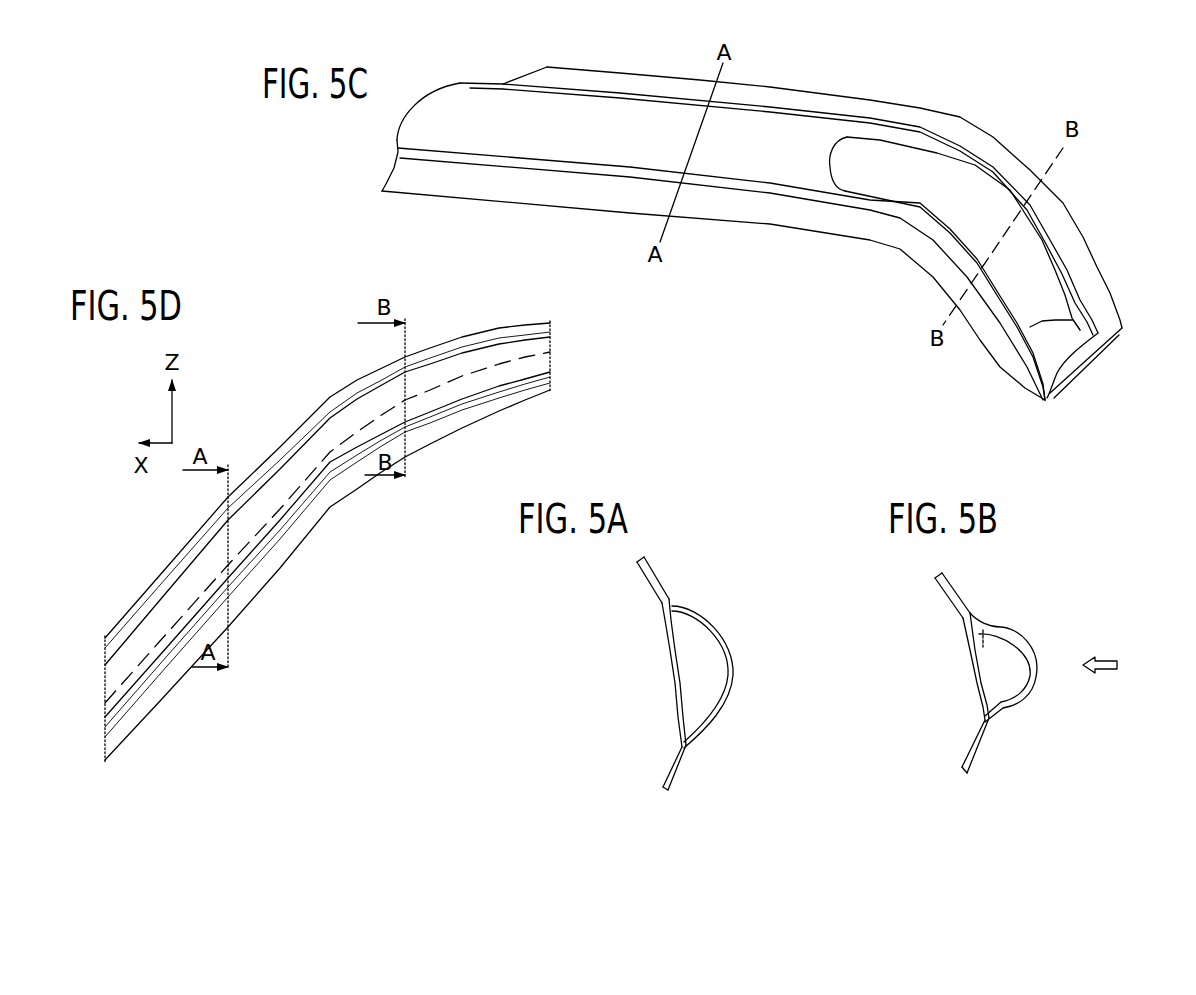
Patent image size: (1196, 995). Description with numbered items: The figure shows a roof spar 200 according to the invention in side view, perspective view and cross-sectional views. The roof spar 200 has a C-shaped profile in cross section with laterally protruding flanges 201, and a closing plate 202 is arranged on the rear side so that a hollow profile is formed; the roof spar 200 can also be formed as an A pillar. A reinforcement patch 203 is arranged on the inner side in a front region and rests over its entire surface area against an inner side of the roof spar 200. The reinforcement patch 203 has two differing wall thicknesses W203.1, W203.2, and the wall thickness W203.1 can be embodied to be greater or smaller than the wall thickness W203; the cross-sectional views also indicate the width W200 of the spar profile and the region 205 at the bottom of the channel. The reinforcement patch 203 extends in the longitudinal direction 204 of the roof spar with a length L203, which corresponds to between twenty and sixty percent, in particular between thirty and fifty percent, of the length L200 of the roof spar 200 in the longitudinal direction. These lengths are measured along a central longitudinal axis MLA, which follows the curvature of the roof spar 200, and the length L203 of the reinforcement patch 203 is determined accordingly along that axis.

In FIG. 5C, the roof spar 200 is at (752, 221).
In FIG. 5D, the roof spar 200 is at (327, 517).
In FIG. 5A, the roof spar 200 is at (708, 662).
In FIG. 5B, the roof spar 200 is at (1014, 653).
In FIG. 5D, the flanges 201 is at (295, 437).
In FIG. 5A, the flanges 201 is at (657, 570).
In FIG. 5B, the flanges 201 is at (962, 673).
In FIG. 5A, the closing plate 202 is at (675, 670).
In FIG. 5B, the closing plate 202 is at (973, 687).
In FIG. 5C, the reinforcement patch 203 is at (1022, 120).
In FIG. 5B, the reinforcement patch 203 is at (1027, 656).
In FIG. 5C, the longitudinal direction 204 is at (747, 260).
In FIG. 5A, the channel bottom 205 is at (720, 683).
In FIG. 5B, the channel bottom 205 is at (1010, 686).
In FIG. 5A, the width of profile W200 is at (682, 643).
In FIG. 5B, the wall thickness W203 is at (1002, 663).
In FIG. 5C, the wall thickness W203.1 is at (897, 183).
In FIG. 5C, the wall thickness W203.2 is at (1028, 287).
In FIG. 5C, the length of the roof spar L200 is at (365, 262).
In FIG. 5C, the length of the reinforcement patch L203 is at (1033, 430).
In FIG. 5D, the central longitudinal axis MLA is at (436, 379).